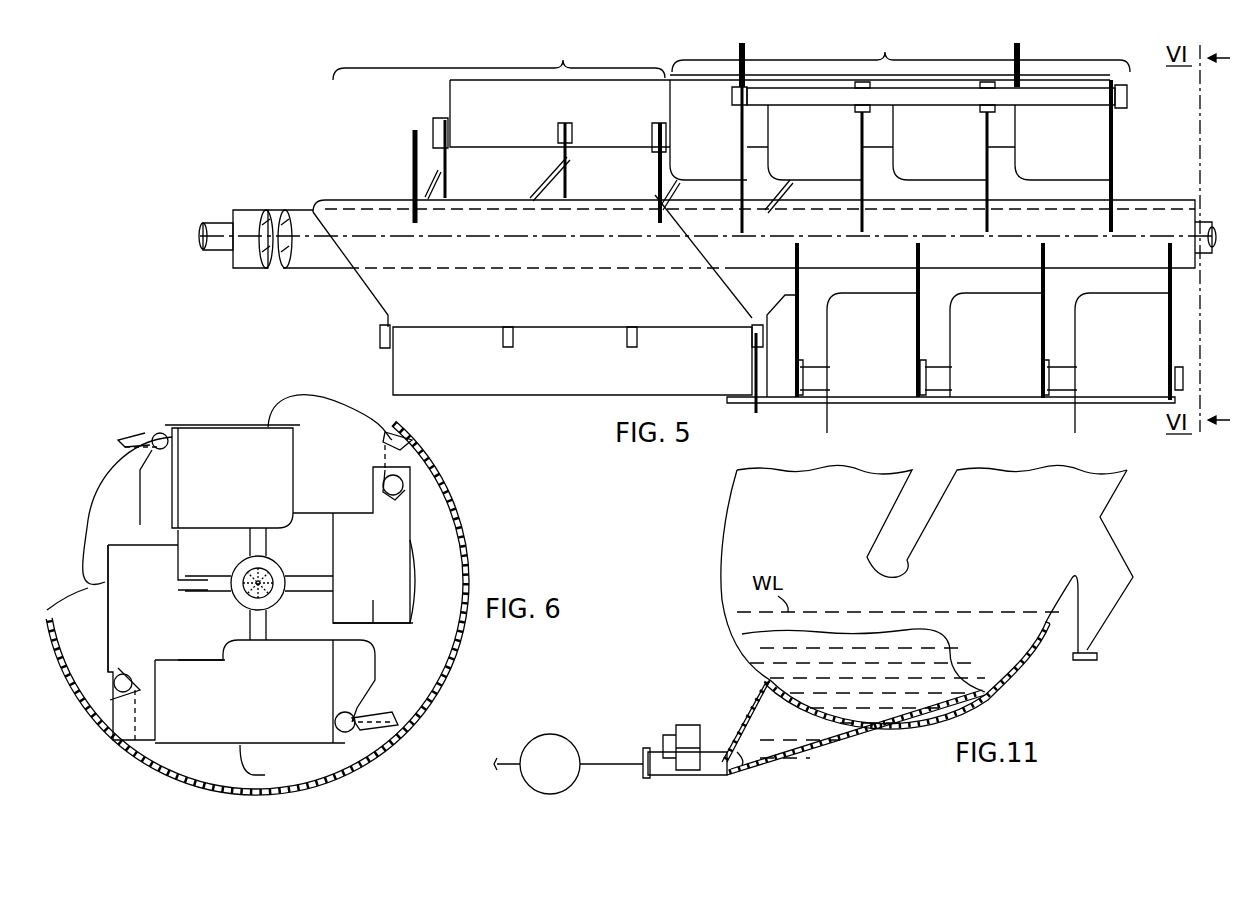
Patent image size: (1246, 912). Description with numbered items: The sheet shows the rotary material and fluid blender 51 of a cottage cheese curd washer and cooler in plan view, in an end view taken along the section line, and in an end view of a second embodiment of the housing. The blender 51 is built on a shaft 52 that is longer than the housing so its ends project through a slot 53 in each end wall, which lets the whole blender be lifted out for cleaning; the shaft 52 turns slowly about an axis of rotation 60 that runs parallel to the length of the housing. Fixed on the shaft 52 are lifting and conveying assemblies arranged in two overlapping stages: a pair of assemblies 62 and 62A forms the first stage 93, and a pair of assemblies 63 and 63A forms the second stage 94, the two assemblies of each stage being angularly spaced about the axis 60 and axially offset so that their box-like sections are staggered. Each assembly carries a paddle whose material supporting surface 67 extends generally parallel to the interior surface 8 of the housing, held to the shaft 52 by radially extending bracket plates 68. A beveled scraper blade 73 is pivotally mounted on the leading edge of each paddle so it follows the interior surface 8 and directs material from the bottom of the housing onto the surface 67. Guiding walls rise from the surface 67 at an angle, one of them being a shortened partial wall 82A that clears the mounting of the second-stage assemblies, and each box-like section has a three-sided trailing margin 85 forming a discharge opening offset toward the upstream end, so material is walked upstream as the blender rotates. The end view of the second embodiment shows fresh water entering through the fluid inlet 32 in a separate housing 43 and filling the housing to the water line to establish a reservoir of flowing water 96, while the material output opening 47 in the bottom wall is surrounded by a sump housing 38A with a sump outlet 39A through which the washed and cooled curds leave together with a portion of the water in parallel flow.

In FIG. 6, the interior surface 8 is at (45, 612).
In FIG. 11, the fluid inlet 32 is at (1087, 660).
In FIG. 11, the sump housing 38A is at (835, 752).
In FIG. 11, the sump outlet 39A is at (648, 775).
In FIG. 11, the separate housing for water inlet 43 is at (1123, 603).
In FIG. 11, the material output opening 47 is at (835, 712).
In FIG. 5, the material and fluid blender 51 is at (405, 140).
In FIG. 6, the material and fluid blender 51 is at (200, 424).
In FIG. 5, the shaft 52 is at (289, 210).
In FIG. 6, the shaft 52 is at (276, 566).
In FIG. 11, the slot 53 is at (955, 468).
In FIG. 5, the axis of rotation 60 is at (219, 250).
In FIG. 6, the axis of rotation 60 is at (248, 575).
In FIG. 5, the lifting and conveying assembly 62 is at (1160, 326).
In FIG. 6, the lifting and conveying assembly 62 is at (110, 614).
In FIG. 5, the lifting and conveying assembly 62A is at (1180, 147).
In FIG. 6, the lifting and conveying assembly 62A is at (424, 672).
In FIG. 5, the lifting and conveying assembly 63 is at (385, 302).
In FIG. 6, the lifting and conveying assembly 63 is at (215, 437).
In FIG. 5, the lifting and conveying assembly 63A is at (420, 196).
In FIG. 6, the lifting and conveying assembly 63A is at (240, 689).
In FIG. 6, the material supporting surface 67 is at (247, 435).
In FIG. 5, the bracket plate 68 is at (1118, 196).
In FIG. 6, the bracket plate 68 is at (333, 590).
In FIG. 5, the scraper blade 73 is at (450, 96).
In FIG. 6, the scraper blade 73 is at (118, 442).
In FIG. 5, the partial wall 82A is at (781, 385).
In FIG. 5, the trailing margin 85 is at (957, 345).
In FIG. 5, the first material lifting and conveying stage 93 is at (901, 53).
In FIG. 5, the second stage 94 is at (499, 57).
In FIG. 11, the reservoir of flowing water 96 is at (746, 660).